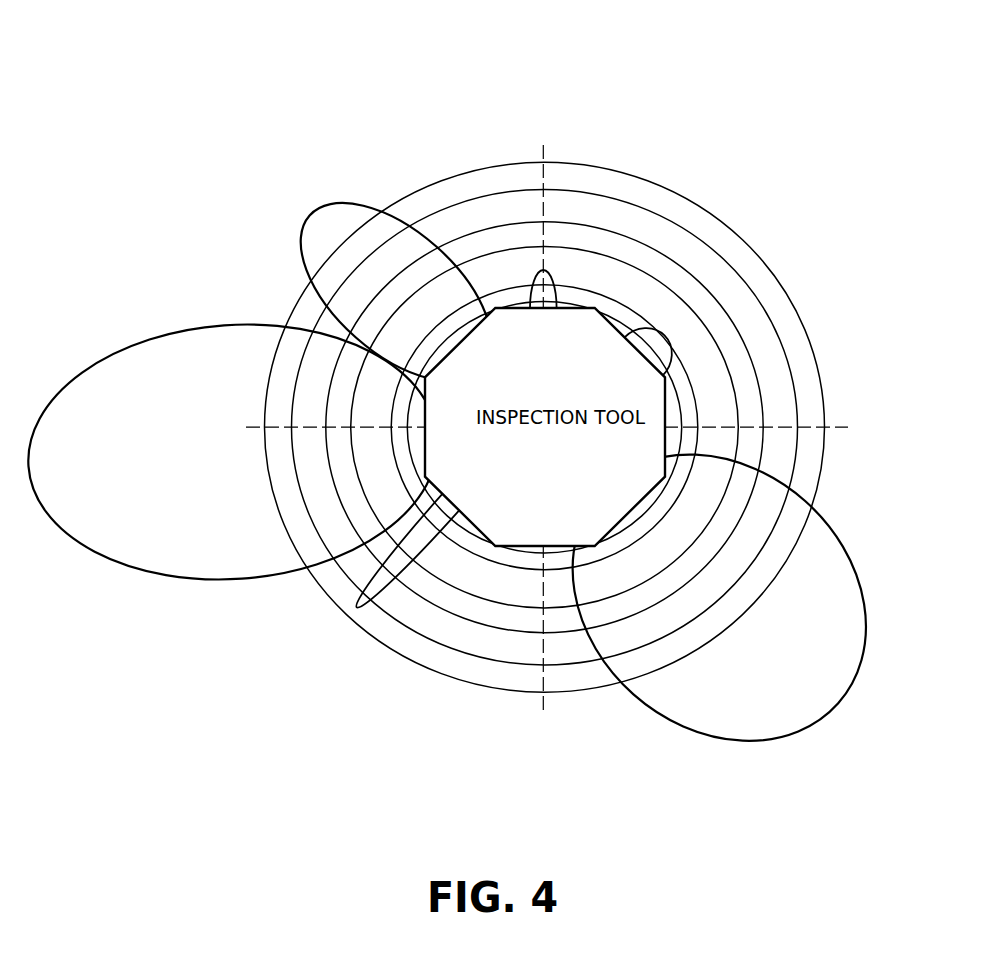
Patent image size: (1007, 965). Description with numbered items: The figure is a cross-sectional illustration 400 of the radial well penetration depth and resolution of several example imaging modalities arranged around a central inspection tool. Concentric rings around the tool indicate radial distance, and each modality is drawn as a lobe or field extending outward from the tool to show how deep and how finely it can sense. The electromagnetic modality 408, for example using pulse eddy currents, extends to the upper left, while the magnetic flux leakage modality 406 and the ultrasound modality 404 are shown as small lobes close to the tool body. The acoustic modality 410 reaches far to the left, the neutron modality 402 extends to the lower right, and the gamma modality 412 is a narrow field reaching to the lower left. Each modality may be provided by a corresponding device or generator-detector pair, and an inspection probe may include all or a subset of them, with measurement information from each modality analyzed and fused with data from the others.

The cross-sectional illustration 400 is at (724, 77).
The neutron modality 402 is at (807, 726).
The ultrasound modality 404 is at (658, 319).
The magnetic flux leakage (MFL) modality 406 is at (551, 274).
The electromagnetic modality 408 is at (318, 207).
The acoustic modality 410 is at (90, 366).
The gamma modality 412 is at (358, 608).